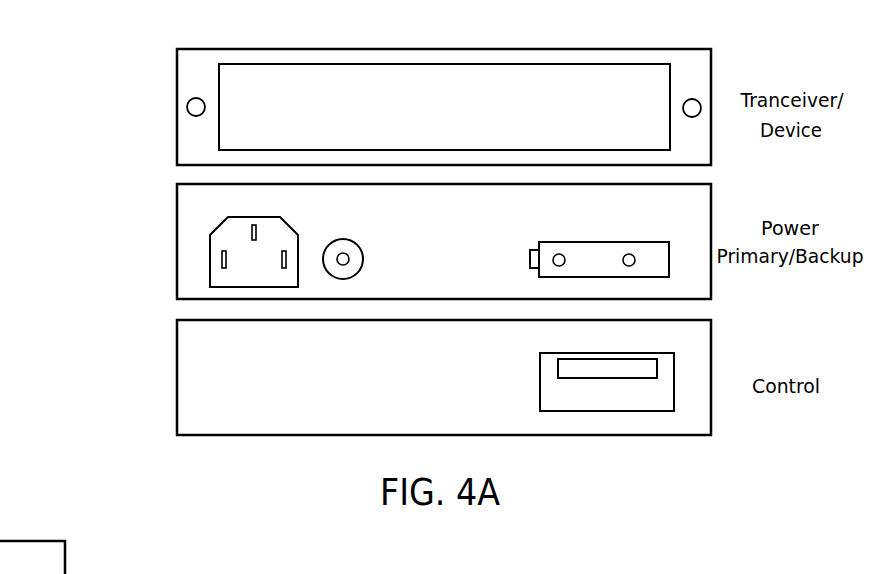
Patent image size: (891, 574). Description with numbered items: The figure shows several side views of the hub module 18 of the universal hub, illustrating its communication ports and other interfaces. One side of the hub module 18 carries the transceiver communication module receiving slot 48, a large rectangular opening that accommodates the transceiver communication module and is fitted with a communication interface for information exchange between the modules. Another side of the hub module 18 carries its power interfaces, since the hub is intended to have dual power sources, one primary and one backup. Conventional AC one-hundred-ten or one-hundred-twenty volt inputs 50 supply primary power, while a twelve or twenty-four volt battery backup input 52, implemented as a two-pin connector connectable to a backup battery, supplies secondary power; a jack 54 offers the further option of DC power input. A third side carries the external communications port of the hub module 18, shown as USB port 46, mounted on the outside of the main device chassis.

The hub module 18 is at (386, 242).
The transceiver communication module receiving slot 48 is at (444, 107).
The AC input 50 is at (254, 239).
The jack 54 is at (343, 246).
The battery backup input 52 is at (599, 246).
The USB port 46 is at (541, 382).